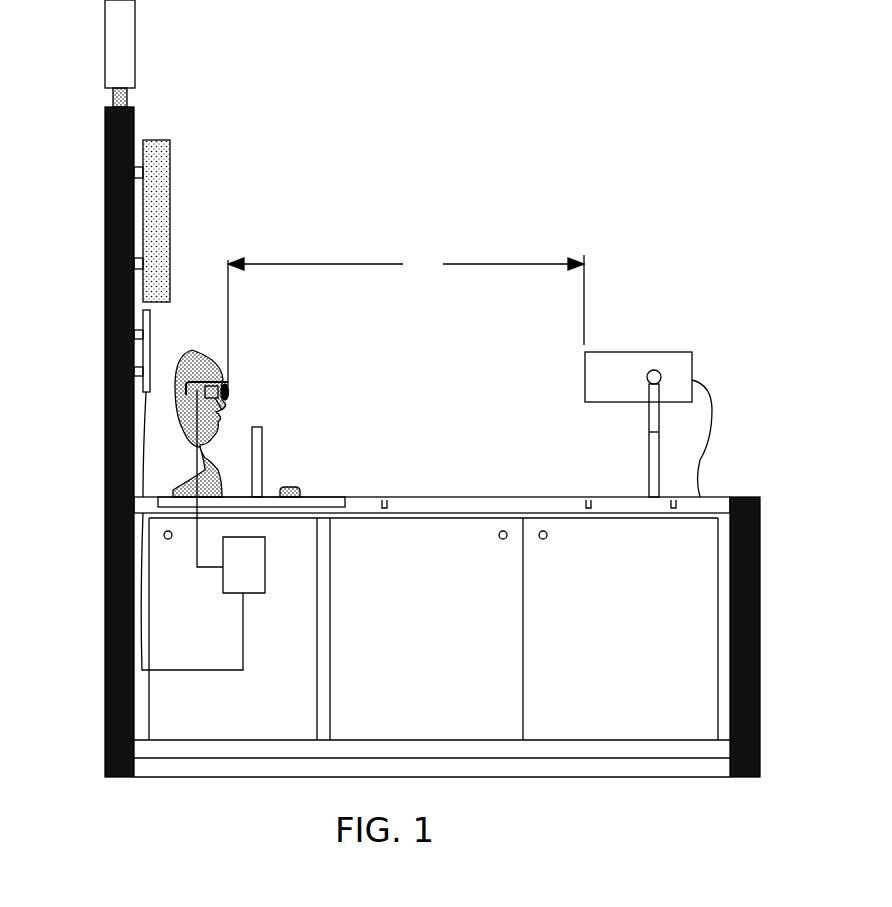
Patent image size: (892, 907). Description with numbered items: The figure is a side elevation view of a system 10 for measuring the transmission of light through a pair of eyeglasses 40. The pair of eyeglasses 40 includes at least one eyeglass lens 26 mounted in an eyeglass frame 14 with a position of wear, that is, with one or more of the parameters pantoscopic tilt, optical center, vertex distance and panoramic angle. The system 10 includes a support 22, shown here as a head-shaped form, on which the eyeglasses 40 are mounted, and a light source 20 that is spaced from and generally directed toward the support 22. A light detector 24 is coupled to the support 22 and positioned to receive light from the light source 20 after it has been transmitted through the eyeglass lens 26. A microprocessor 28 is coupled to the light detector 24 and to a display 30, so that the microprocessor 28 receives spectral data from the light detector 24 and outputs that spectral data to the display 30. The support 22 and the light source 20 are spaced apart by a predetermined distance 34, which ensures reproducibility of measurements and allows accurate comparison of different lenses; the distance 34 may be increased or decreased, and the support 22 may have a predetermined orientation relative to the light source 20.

The system 10 is at (581, 178).
The eyeglass frame 14 is at (207, 383).
The light source 20 is at (625, 362).
The support 22 is at (190, 348).
The light detector 24 is at (218, 432).
The eyeglass lens 26 is at (230, 393).
The microprocessor 28 is at (253, 560).
The display 30 is at (165, 202).
The distance 34 is at (406, 321).
The pair of eyeglasses 40 is at (229, 386).